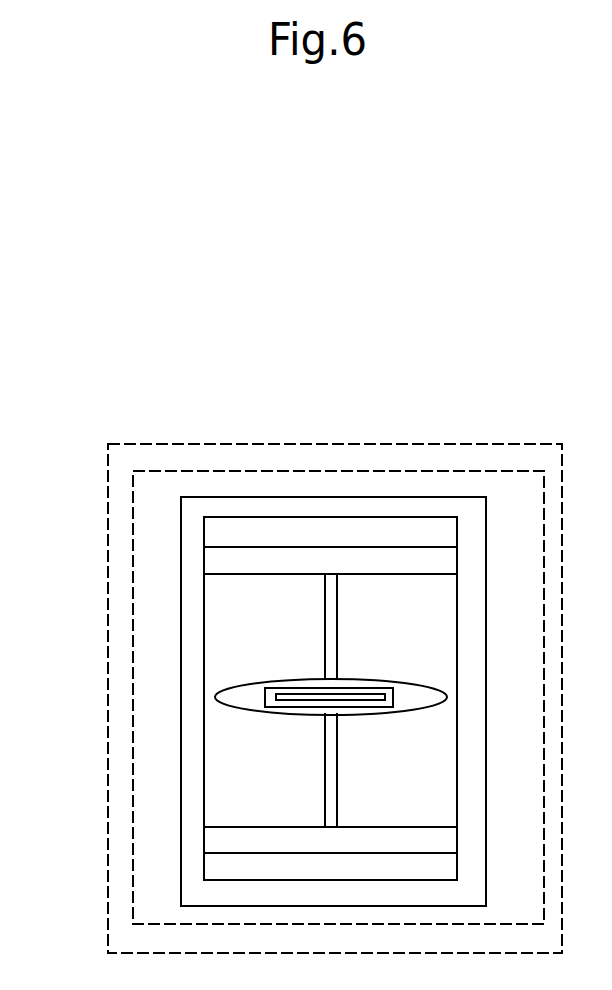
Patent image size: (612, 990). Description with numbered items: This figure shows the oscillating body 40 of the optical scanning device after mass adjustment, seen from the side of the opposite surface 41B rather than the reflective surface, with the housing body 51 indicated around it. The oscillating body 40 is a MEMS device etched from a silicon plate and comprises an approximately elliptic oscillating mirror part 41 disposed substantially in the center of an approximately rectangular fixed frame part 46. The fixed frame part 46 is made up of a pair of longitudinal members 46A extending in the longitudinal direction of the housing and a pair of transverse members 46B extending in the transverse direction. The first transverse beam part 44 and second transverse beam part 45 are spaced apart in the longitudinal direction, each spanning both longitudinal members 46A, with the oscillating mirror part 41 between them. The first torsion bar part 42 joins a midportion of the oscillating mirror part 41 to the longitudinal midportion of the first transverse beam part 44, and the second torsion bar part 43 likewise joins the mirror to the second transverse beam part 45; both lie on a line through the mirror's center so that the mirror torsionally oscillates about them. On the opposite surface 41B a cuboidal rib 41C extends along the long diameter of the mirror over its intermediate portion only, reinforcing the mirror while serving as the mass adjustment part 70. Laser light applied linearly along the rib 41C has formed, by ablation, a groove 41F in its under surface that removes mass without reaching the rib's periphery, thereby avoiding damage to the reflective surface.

The housing body 51 is at (105, 485).
The oscillating body 40 is at (205, 484).
The fixed frame part 46 is at (496, 553).
The longitudinal members 46A is at (193, 742).
The transverse members 46B is at (343, 507).
The first transverse beam part 44 is at (312, 548).
The second transverse beam part 45 is at (300, 827).
The first torsion bar part 42 is at (325, 633).
The second torsion bar part 43 is at (325, 790).
The oscillating mirror part 41 is at (331, 701).
The opposite surface 41B is at (418, 690).
The rib 41C is at (280, 687).
The mass adjustment part 70 is at (329, 697).
The groove 41F is at (360, 701).